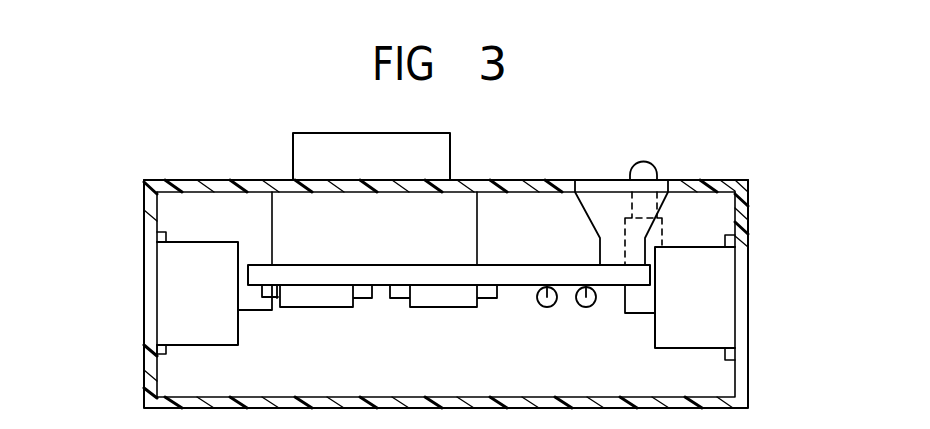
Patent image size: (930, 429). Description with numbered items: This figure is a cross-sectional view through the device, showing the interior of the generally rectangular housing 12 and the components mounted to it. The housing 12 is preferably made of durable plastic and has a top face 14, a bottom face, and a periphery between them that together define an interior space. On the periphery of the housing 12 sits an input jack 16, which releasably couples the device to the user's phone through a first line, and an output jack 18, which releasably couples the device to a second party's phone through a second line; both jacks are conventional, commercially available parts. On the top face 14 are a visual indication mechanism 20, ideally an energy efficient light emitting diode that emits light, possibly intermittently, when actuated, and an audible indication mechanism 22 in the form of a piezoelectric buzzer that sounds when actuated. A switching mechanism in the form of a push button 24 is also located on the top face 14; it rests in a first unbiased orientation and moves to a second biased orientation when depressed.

The housing 12 is at (148, 180).
The top face 14 is at (212, 180).
The input jack 16 is at (145, 300).
The output jack 18 is at (748, 318).
The visual indication mechanism 20 is at (652, 167).
The audible indication mechanism 22 is at (580, 199).
The push button 24 is at (325, 133).